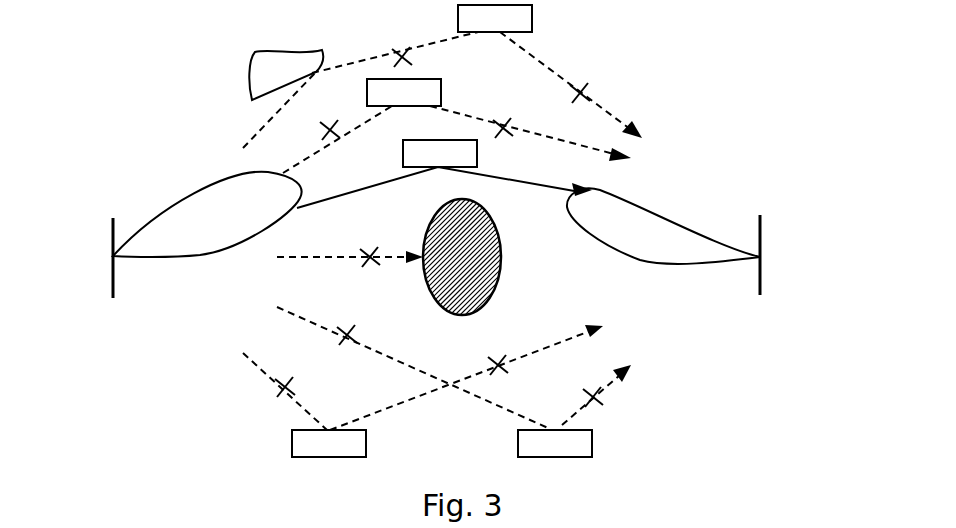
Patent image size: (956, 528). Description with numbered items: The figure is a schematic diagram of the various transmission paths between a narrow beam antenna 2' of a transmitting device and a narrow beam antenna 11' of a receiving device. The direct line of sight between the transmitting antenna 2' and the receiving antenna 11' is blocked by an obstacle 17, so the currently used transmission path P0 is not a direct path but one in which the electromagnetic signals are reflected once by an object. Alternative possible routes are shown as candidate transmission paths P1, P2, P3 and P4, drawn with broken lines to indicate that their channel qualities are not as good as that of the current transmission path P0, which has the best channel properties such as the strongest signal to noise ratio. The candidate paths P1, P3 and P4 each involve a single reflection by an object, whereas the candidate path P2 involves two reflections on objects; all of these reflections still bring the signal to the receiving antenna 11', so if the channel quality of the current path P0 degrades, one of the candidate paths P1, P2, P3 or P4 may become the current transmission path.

The narrow beam antenna of transmitting device 2' is at (184, 235).
The narrow beam antenna of receiving device 11' is at (694, 241).
The obstacle 17 is at (502, 263).
The current transmission path P0 is at (360, 192).
The candidate transmission path P1 is at (442, 115).
The candidate transmission path P2 is at (545, 62).
The candidate transmission path P3 is at (387, 352).
The candidate transmission path P4 is at (397, 403).